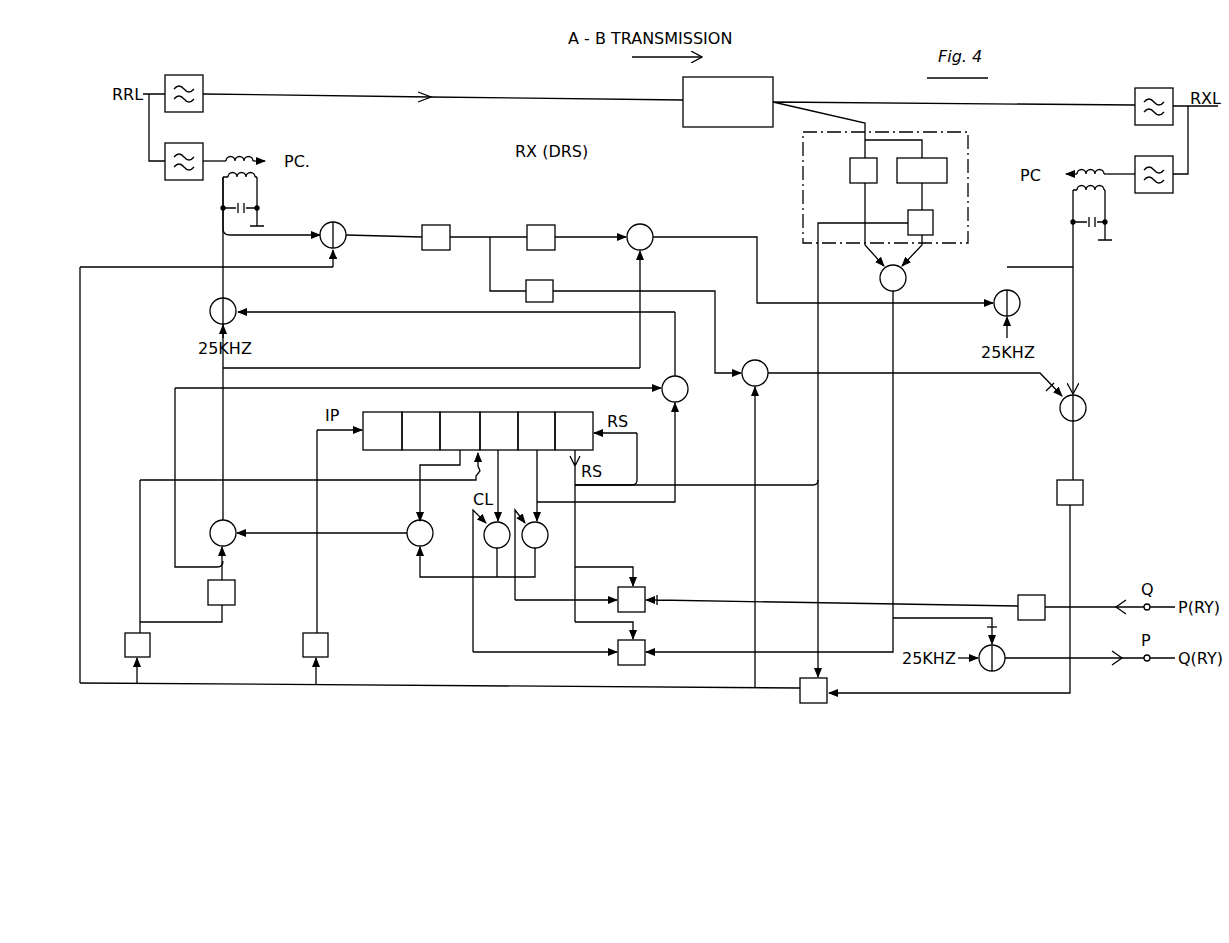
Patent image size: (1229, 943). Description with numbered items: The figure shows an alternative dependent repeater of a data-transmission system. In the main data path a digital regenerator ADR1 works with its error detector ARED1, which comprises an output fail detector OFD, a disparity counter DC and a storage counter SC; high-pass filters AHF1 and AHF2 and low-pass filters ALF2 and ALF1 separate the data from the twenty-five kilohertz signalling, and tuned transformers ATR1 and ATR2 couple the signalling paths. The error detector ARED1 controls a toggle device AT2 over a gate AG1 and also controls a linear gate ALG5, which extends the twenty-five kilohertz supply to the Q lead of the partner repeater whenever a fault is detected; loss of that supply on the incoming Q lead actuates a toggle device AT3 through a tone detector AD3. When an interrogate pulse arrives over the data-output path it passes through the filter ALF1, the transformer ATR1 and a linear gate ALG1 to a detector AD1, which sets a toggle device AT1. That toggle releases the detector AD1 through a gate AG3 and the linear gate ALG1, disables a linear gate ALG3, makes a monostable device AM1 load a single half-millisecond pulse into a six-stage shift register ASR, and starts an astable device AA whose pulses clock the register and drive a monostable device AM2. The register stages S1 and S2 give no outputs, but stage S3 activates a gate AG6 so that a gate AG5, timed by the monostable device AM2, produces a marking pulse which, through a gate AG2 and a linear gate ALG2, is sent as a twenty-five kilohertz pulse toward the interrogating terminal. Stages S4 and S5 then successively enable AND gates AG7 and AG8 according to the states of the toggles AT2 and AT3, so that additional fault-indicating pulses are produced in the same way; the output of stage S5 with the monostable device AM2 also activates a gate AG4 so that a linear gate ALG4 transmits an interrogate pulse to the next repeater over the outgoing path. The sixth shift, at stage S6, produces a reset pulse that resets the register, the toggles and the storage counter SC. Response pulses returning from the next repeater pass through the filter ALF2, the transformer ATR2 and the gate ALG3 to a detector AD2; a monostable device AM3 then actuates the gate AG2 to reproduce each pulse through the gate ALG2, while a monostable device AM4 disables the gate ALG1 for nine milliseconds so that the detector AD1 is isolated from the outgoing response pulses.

The high-pass filter AHF1 is at (184, 83).
The low-pass filter ALF2 is at (183, 151).
The tuned transformer ATR2 is at (244, 185).
The linear gate ALG3 is at (332, 235).
The detector AD2 is at (433, 226).
The monostable device AM3 is at (535, 226).
The monostable device AM4 is at (539, 280).
The gate AG2 is at (640, 225).
The digital regenerator ADR1 is at (728, 102).
The error detector ARED1 is at (885, 187).
The output fail detector OFD is at (863, 170).
The disparity counter DC is at (922, 170).
The storage counter SC is at (920, 222).
The gate AG1 is at (910, 278).
The high-pass filter AHF2 is at (1154, 96).
The low-pass filter ALF1 is at (1153, 164).
The tuned transformer ATR1 is at (1091, 210).
The linear gate ALG2 is at (1029, 310).
The linear gate ALG1 is at (1095, 408).
The detector AD1 is at (1090, 492).
The linear gate ALG4 is at (202, 318).
The gate AG3 is at (758, 362).
The gate AG4 is at (692, 389).
The shift register ASR is at (478, 420).
The shift register stage S1 is at (382, 431).
The shift register stage S2 is at (421, 431).
The shift register stage S3 is at (460, 431).
The shift register stage S4 is at (499, 431).
The shift register stage S5 is at (536, 431).
The shift register stage S6 is at (574, 431).
The gate AG5 is at (209, 524).
The gate AG6 is at (405, 524).
The AND gate AG7 is at (491, 546).
The AND gate AG8 is at (547, 546).
The monostable device AM2 is at (246, 598).
The monostable device AM1 is at (348, 651).
The astable device AA is at (151, 645).
The toggle device AT1 is at (835, 688).
The toggle device AT2 is at (651, 644).
The toggle device AT3 is at (651, 593).
The tone detector AD3 is at (1029, 596).
The linear gate ALG5 is at (1014, 653).